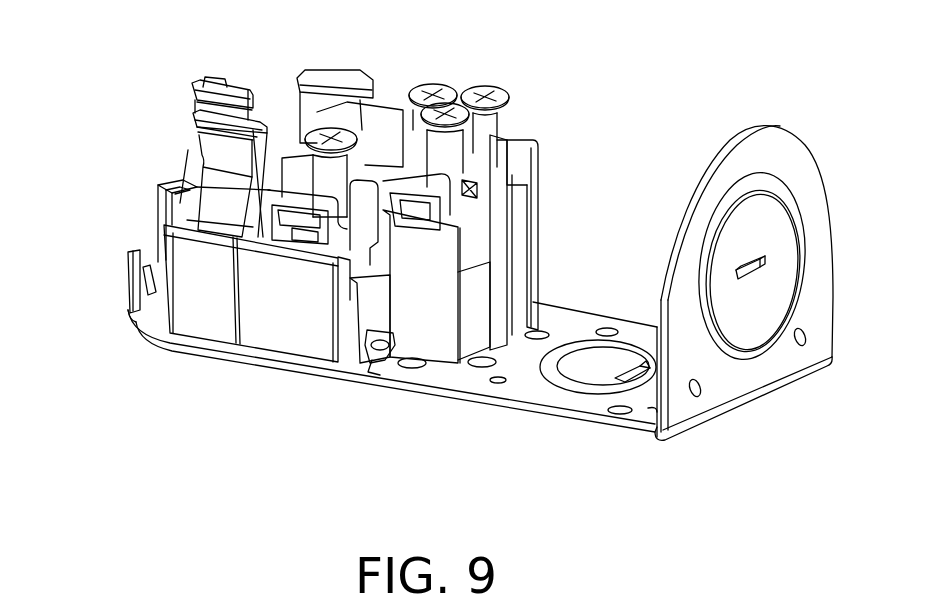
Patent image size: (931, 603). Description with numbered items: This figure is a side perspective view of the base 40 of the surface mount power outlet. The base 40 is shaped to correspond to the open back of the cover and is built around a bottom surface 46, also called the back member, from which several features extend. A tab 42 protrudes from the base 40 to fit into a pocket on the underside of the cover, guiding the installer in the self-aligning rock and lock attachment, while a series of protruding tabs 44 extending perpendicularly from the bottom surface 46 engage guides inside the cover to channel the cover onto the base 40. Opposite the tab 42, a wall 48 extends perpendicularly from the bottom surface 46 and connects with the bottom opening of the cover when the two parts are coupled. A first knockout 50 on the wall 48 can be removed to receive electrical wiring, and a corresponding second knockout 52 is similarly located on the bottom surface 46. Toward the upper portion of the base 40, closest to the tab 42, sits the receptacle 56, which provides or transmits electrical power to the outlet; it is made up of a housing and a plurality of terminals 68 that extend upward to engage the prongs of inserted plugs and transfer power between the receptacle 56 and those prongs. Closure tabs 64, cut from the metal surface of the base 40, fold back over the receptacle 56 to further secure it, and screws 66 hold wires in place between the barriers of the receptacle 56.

The base 40 is at (612, 255).
The tab 42 is at (154, 268).
The protruding tabs 44 is at (133, 282).
The bottom surface 46 is at (468, 377).
The wall 48 is at (693, 407).
The first knockout 50 is at (767, 241).
The second knockout 52 is at (611, 382).
The receptacle 56 is at (287, 307).
The closure tabs 64 is at (365, 378).
The screws 66 is at (302, 143).
The terminals 68 is at (200, 120).